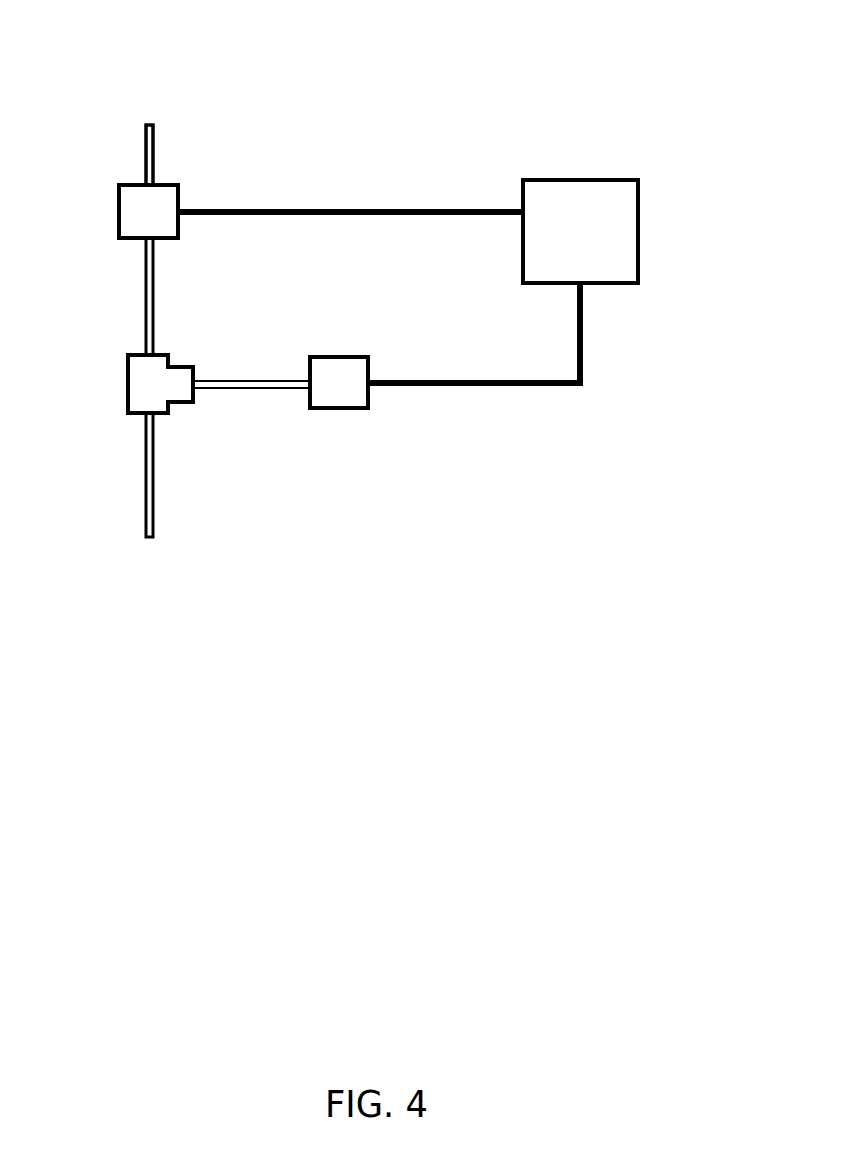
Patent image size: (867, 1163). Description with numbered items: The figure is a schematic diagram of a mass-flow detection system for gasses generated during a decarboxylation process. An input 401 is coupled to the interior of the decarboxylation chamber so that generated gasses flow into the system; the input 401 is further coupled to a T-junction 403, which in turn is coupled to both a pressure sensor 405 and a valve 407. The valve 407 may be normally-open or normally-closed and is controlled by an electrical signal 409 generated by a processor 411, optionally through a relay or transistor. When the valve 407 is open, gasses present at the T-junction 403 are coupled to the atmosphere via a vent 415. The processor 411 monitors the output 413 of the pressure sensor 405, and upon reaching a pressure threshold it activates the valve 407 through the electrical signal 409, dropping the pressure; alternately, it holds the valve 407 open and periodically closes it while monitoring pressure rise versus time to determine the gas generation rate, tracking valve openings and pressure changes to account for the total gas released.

The input 401 is at (143, 533).
The T-junction 403 is at (148, 378).
The pressure sensor 405 is at (333, 387).
The valve 407 is at (142, 220).
The electrical signal 409 is at (290, 210).
The processor 411 is at (602, 218).
The output 413 is at (510, 385).
The vent 415 is at (143, 126).